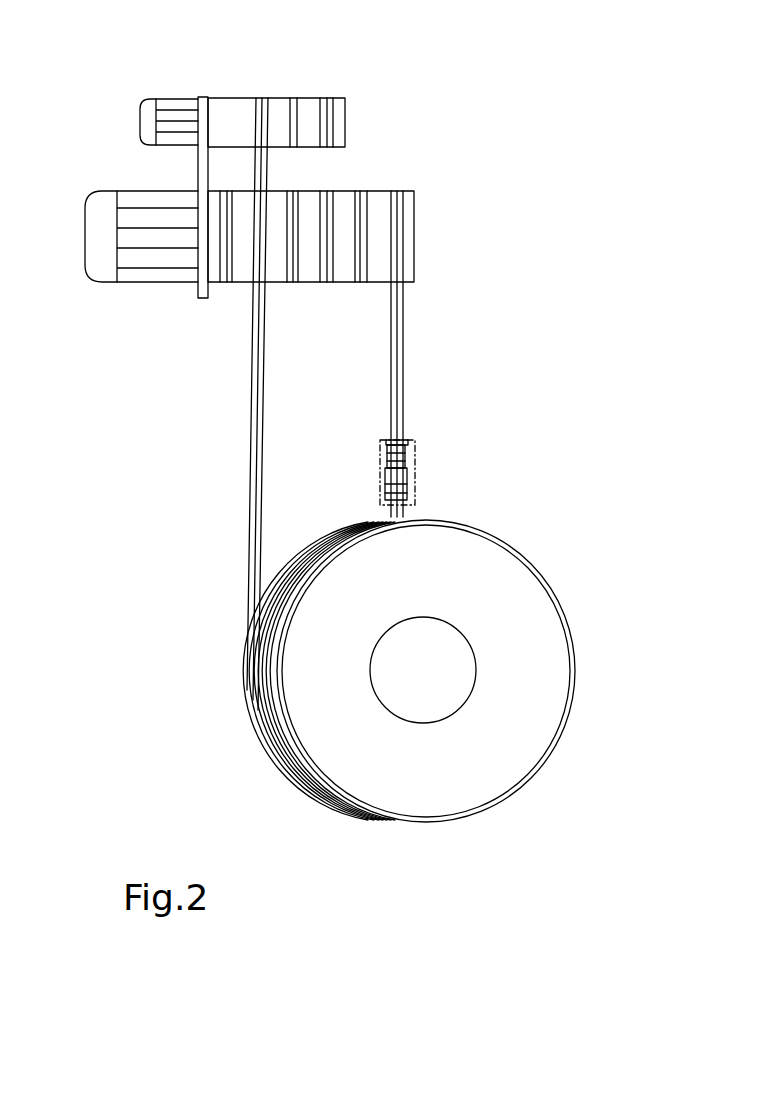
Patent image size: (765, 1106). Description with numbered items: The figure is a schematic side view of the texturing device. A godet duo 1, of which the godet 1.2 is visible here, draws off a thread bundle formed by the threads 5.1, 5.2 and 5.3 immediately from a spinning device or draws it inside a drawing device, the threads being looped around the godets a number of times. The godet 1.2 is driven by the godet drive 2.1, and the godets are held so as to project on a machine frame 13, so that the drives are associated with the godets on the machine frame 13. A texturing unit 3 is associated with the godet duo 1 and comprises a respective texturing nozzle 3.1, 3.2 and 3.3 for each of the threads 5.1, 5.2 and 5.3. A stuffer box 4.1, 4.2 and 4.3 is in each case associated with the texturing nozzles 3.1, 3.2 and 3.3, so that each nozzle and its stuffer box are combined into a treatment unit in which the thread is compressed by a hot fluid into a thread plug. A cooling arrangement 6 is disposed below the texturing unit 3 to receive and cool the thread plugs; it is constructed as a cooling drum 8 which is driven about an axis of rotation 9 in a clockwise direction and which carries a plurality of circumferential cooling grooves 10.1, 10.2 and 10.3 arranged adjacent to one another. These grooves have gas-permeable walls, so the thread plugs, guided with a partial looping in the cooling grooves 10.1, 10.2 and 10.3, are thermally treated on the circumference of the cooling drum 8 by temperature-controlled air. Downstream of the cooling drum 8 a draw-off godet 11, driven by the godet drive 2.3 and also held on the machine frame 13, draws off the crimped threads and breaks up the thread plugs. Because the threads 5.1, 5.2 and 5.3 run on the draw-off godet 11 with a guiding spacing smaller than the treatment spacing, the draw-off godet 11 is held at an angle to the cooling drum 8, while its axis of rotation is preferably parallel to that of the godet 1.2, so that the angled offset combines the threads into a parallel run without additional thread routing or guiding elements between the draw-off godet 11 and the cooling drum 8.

The godet duo 1 is at (427, 225).
The godet 1.2 is at (376, 207).
The godet drive 2.1 is at (100, 263).
The godet drive 2.3 is at (148, 113).
The texturing unit 3 is at (412, 433).
The texturing nozzle 3.1 is at (407, 465).
The texturing nozzle 3.2 is at (407, 453).
The texturing nozzle 3.3 is at (413, 445).
The stuffer box 4.1 is at (393, 500).
The stuffer box 4.2 is at (390, 491).
The stuffer box 4.3 is at (385, 482).
The thread 5.1 is at (400, 350).
The thread 5.2 is at (398, 323).
The thread 5.3 is at (392, 292).
The cooling arrangement 6 is at (560, 577).
The cooling drum 8 is at (572, 697).
The axis of rotation 9 is at (437, 697).
The cooling groove 10.1 is at (250, 657).
The cooling groove 10.2 is at (268, 688).
The cooling groove 10.3 is at (282, 737).
The draw-off godet 11 is at (228, 122).
The machine frame 13 is at (205, 110).